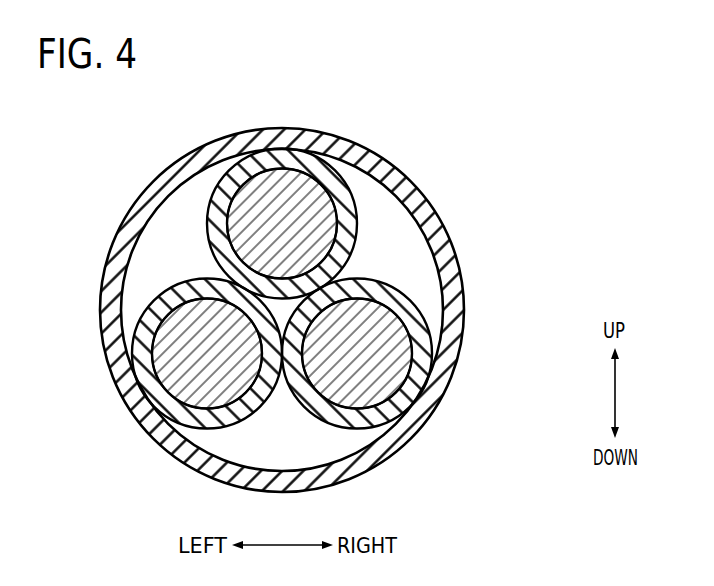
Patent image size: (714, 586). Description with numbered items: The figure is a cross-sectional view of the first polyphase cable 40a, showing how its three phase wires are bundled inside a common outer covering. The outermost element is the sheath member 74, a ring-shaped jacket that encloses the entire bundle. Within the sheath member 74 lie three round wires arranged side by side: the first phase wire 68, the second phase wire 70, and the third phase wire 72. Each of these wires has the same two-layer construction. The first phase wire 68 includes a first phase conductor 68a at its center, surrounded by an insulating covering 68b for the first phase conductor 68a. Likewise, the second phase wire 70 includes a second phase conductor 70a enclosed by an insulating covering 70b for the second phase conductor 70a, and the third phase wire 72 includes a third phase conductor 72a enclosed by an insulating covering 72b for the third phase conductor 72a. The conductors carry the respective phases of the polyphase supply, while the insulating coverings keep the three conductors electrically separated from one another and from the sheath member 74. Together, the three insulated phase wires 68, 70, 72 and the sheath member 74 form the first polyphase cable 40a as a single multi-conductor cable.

The first polyphase cable 40a is at (566, 86).
The sheath member 74 is at (408, 427).
The second phase wire 70 is at (353, 189).
The second phase conductor 70a is at (322, 212).
The insulating covering 70b is at (352, 230).
The third phase wire 72 is at (153, 302).
The third phase conductor 72a is at (170, 350).
The insulating covering 72b is at (147, 375).
The first phase wire 68 is at (417, 300).
The first phase conductor 68a is at (393, 348).
The insulating covering 68b is at (418, 377).